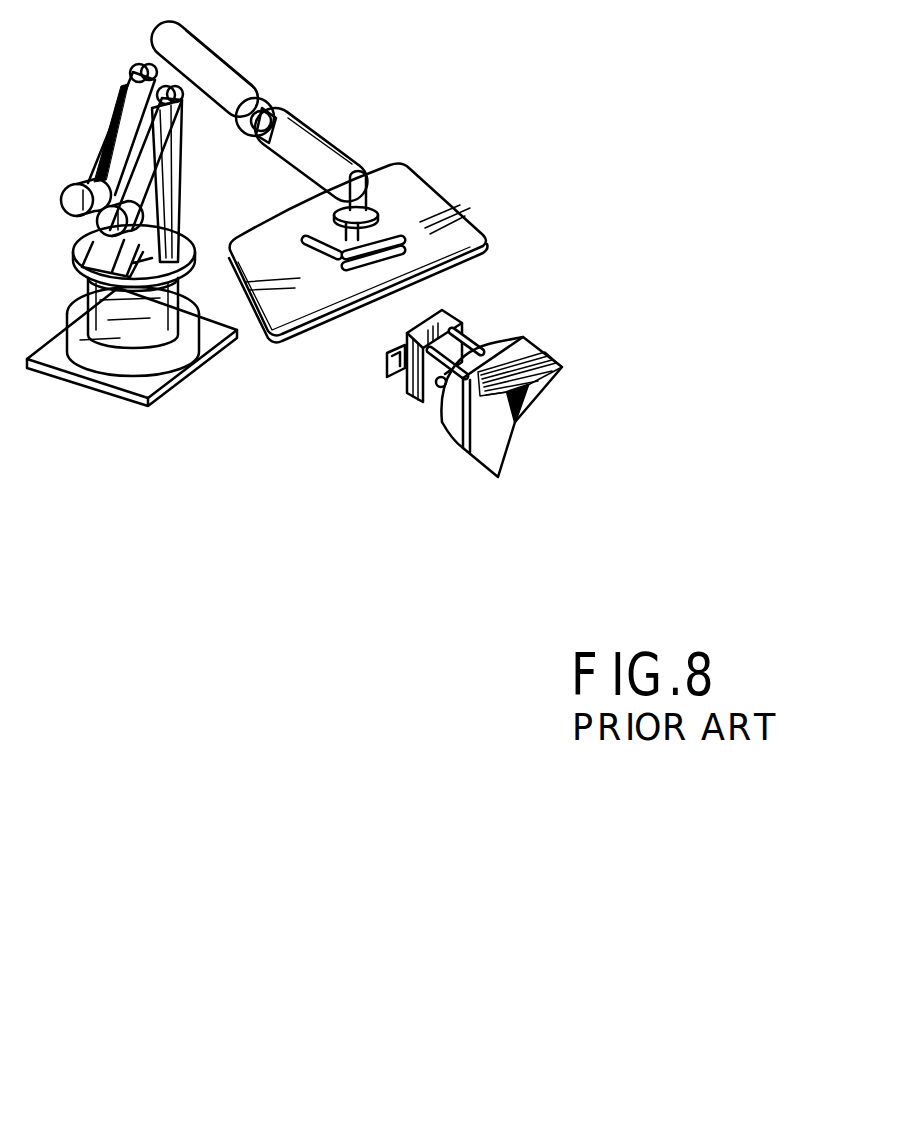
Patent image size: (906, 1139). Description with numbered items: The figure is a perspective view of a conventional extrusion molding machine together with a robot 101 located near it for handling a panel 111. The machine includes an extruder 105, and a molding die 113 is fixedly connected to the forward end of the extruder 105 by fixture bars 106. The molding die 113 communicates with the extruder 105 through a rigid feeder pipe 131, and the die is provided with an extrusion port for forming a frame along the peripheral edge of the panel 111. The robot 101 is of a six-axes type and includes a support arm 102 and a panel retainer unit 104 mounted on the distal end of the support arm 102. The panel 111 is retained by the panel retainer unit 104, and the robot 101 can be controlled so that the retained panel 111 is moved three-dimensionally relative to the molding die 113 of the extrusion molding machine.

The robot 101 is at (108, 123).
The support arm 102 is at (320, 143).
The panel retainer unit 104 is at (331, 250).
The extruder 105 is at (542, 350).
The fixture bars 106 is at (466, 340).
The panel 111 is at (440, 215).
The molding die 113 is at (407, 388).
The rigid feeder pipe 131 is at (435, 395).